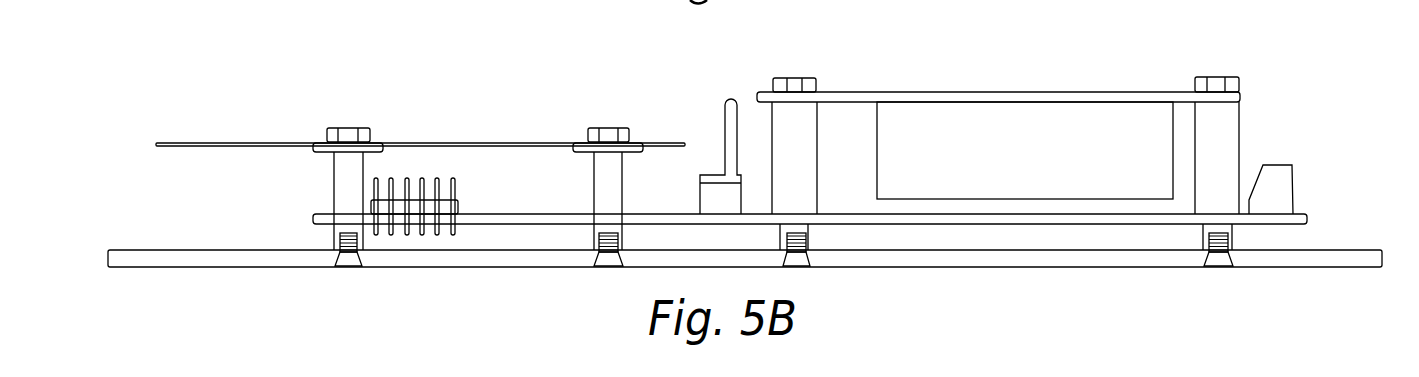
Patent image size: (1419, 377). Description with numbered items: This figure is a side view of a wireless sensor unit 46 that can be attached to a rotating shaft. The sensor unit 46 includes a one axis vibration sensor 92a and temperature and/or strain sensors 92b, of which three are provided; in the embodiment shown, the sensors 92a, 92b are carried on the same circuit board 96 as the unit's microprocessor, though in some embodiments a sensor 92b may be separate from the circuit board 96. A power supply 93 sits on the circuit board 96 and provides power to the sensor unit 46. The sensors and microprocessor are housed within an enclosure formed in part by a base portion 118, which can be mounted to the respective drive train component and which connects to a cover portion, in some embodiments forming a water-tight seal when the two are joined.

The sensor unit 46 is at (278, 66).
The one axis vibration sensor 92a is at (732, 106).
The temperature and/or strain sensor 92b is at (1293, 190).
The power supply 93 is at (978, 131).
The circuit board 96 is at (1028, 221).
The base portion 118 is at (1282, 119).